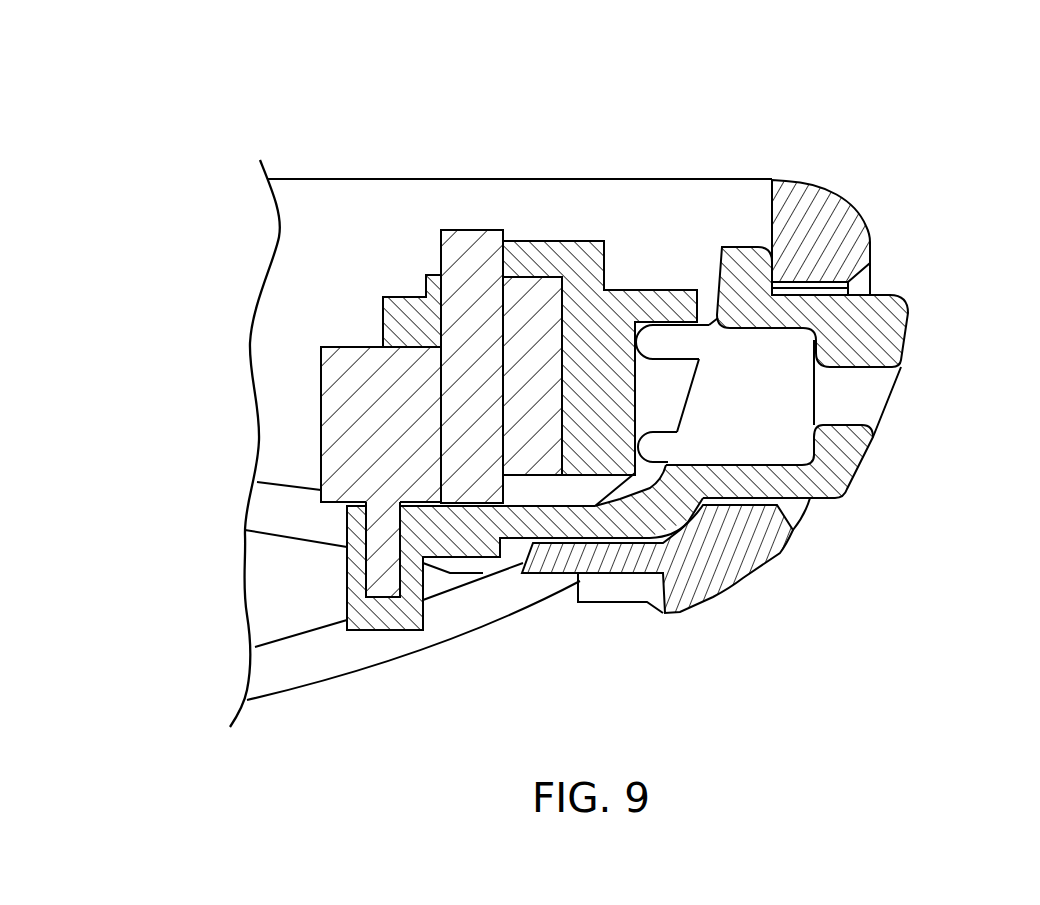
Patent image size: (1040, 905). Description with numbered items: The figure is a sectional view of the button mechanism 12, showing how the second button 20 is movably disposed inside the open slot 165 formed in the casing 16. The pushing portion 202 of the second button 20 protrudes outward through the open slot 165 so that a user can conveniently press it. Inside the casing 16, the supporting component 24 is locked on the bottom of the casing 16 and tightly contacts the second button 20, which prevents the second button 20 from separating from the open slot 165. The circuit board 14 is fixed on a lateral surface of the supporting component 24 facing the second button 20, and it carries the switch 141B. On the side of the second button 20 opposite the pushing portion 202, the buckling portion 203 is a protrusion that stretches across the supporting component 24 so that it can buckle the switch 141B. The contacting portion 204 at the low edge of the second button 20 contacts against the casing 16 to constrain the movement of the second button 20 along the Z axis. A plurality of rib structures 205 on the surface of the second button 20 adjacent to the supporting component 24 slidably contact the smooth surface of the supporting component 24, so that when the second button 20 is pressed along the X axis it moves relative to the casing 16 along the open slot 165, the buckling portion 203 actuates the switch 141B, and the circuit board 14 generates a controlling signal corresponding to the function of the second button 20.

The button mechanism 12 is at (915, 117).
The circuit board 14 is at (326, 368).
The switch 141B is at (386, 576).
The casing 16 is at (813, 232).
The open slot 165 is at (797, 512).
The second button 20 is at (672, 477).
The pushing portion 202 is at (887, 330).
The buckling portion 203 is at (392, 617).
The contacting portion 204 is at (685, 522).
The rib structures 205 is at (682, 338).
The supporting component 24 is at (551, 258).